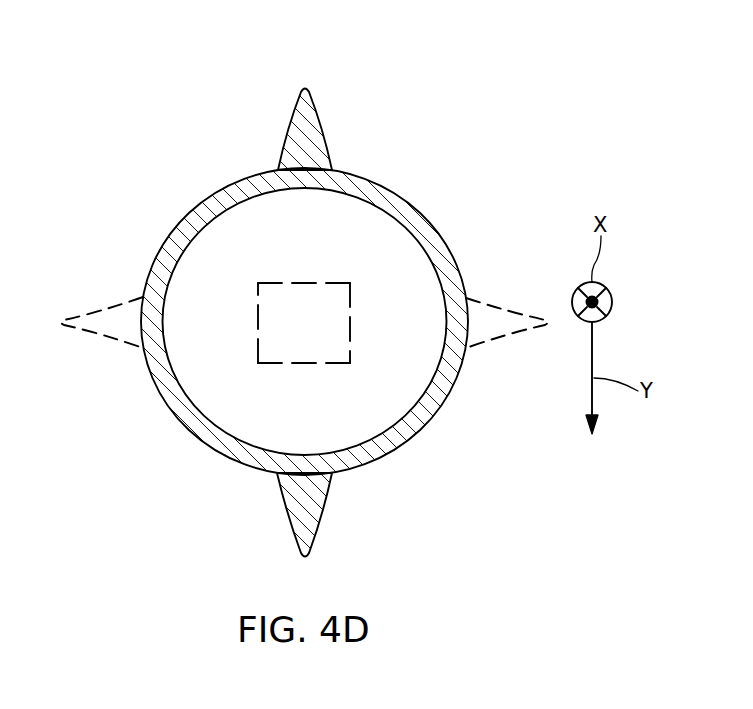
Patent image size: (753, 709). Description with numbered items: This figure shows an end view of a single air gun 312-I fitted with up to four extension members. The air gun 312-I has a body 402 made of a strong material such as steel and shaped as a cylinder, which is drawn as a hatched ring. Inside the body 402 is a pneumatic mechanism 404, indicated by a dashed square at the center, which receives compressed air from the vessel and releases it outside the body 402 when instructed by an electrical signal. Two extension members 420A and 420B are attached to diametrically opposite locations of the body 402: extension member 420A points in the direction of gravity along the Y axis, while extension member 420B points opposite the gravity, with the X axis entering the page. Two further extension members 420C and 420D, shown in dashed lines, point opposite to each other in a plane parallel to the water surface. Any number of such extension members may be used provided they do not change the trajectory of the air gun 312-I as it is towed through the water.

The air gun 312-I is at (493, 85).
The body 402 is at (392, 190).
The pneumatic mechanism 404 is at (302, 282).
The extension member 420A is at (298, 508).
The extension member 420B is at (305, 128).
The extension member 420C is at (503, 326).
The extension member 420D is at (90, 323).